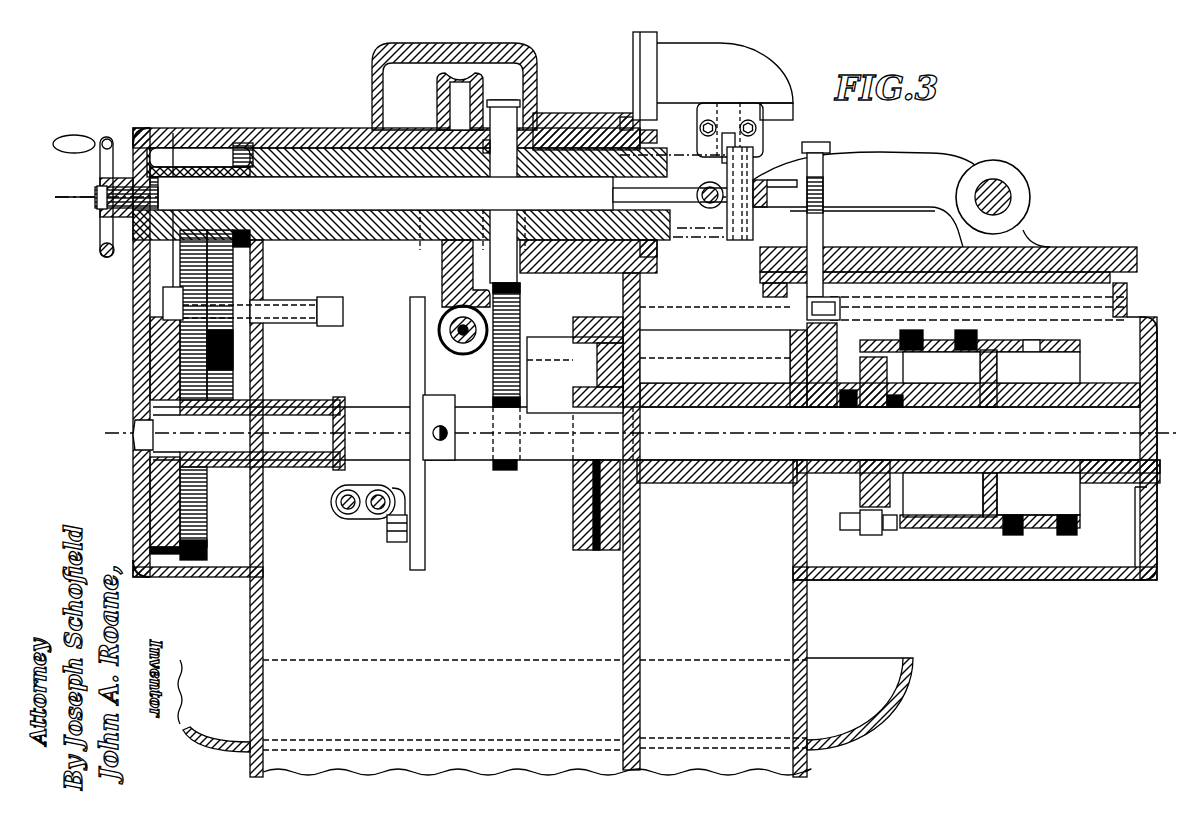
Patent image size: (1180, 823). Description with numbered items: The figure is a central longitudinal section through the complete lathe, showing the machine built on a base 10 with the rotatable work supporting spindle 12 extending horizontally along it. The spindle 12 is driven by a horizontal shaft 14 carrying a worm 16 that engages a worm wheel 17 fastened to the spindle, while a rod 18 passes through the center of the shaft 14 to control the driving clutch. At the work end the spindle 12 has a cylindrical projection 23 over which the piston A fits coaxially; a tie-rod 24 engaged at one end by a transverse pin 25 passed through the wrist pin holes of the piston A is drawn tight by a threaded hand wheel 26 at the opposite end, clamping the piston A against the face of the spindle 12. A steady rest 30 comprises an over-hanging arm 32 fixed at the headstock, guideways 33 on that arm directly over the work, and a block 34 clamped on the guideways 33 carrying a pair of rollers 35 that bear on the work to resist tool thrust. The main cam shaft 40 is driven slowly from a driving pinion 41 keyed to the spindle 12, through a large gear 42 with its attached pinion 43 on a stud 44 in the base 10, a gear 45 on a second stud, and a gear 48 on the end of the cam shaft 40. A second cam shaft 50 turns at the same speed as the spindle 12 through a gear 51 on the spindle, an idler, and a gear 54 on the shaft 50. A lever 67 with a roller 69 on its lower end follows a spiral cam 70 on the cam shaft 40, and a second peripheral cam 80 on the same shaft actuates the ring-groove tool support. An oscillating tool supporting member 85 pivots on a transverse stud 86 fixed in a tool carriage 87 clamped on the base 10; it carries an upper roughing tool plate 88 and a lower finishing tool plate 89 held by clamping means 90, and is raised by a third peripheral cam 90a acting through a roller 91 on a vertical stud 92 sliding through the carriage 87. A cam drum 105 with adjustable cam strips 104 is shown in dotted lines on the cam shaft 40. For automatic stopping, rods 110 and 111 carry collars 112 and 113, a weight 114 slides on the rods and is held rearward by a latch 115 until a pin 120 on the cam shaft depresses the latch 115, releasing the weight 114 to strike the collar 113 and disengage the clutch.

The base 10 is at (808, 616).
The work supporting spindle 12 is at (553, 143).
The horizontal shaft 14 is at (463, 350).
The worm 16 is at (447, 338).
The worm wheel 17 is at (447, 262).
The rod 18 is at (450, 330).
The cylindrical projection 23 is at (667, 230).
The tie-rod 24 is at (322, 190).
The transverse pin 25 is at (704, 188).
The hand wheel 26 is at (105, 257).
The steady rest 30 is at (646, 58).
The over-hanging arm 32 is at (702, 56).
The guideways 33 is at (795, 111).
The block 34 is at (723, 114).
The rollers 35 is at (737, 152).
The main cam shaft 40 is at (555, 465).
The driving pinion 41 is at (235, 150).
The large gear 42 is at (230, 345).
The pinion 43 is at (165, 295).
The stud 44 is at (340, 300).
The gear 45 is at (178, 352).
The gear 48 is at (180, 408).
The second cam shaft 50 is at (548, 355).
The gear 51 is at (507, 106).
The gear 54 is at (500, 470).
The lever 67 is at (855, 531).
The roller 69 is at (872, 534).
The cam 70 is at (882, 490).
The second peripheral cam 80 is at (580, 550).
The oscillating tool supporting member 85 is at (855, 206).
The transverse stud 86 is at (1011, 193).
The tool carriage 87 is at (1080, 252).
The upper tool plate 88 is at (817, 177).
The lower tool plate 89 is at (742, 222).
The clamping means 90 is at (780, 167).
The third peripheral cam 90a is at (825, 325).
The roller 91 is at (790, 334).
The stud 92 is at (770, 281).
The cam strips 104 is at (1070, 535).
The cam drum 105 is at (1070, 357).
The rod 110 is at (344, 510).
The rod 111 is at (374, 511).
The collar 112 is at (338, 495).
The collar 113 is at (360, 492).
The weight 114 is at (333, 505).
The latch 115 is at (393, 543).
The pin 120 is at (405, 494).
The piston A is at (713, 222).